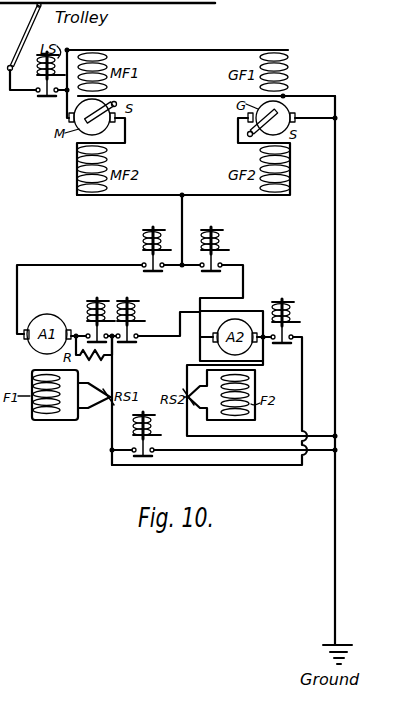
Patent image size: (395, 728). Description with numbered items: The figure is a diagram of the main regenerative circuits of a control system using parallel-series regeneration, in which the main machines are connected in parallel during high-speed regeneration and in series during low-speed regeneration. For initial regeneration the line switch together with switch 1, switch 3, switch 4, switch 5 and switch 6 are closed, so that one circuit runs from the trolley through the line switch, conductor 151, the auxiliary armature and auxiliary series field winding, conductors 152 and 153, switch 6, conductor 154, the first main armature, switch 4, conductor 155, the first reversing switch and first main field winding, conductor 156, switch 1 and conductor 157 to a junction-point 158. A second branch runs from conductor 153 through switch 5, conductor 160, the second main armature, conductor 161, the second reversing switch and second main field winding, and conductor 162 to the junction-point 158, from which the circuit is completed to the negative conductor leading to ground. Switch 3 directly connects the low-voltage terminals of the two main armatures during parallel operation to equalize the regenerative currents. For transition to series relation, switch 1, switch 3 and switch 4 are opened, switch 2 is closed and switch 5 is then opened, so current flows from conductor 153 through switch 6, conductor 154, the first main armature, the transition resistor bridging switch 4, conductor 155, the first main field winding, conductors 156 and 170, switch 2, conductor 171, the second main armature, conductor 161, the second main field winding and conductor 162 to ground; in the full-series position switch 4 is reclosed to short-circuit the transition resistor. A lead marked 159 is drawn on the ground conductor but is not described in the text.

The switch 1 is at (133, 432).
The switch 2 is at (298, 336).
The switch 3 is at (142, 300).
The switch 4 is at (107, 300).
The switch 5 is at (223, 272).
The switch 6 is at (167, 270).
The conductor 151 is at (64, 101).
The conductor 152 is at (127, 196).
The conductor 153 is at (182, 203).
The conductor 154 is at (112, 265).
The conductor 155 is at (115, 364).
The conductor 156 is at (111, 433).
The conductor 157 is at (227, 452).
The junction-point 158 is at (336, 452).
The ground conductor 159 is at (338, 584).
The conductor 160 is at (239, 266).
The conductor 161 is at (256, 364).
The conductor 162 is at (263, 428).
The conductor 170 is at (300, 392).
The conductor 171 is at (201, 347).